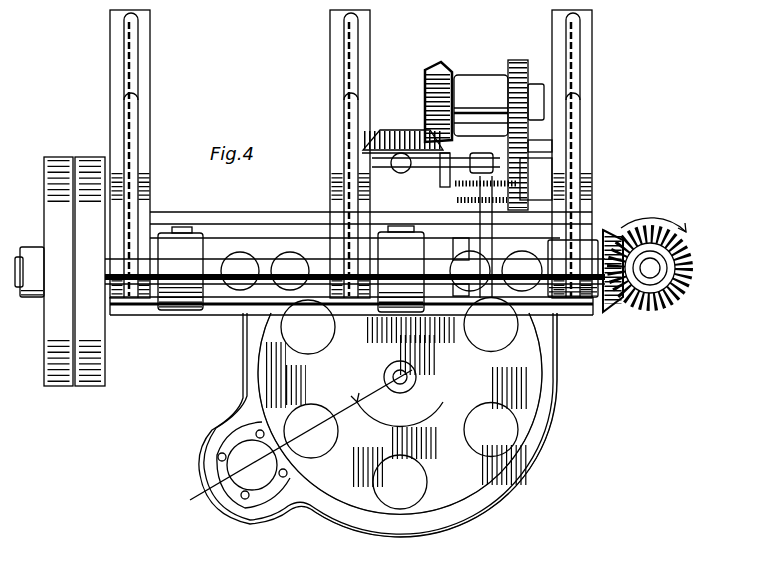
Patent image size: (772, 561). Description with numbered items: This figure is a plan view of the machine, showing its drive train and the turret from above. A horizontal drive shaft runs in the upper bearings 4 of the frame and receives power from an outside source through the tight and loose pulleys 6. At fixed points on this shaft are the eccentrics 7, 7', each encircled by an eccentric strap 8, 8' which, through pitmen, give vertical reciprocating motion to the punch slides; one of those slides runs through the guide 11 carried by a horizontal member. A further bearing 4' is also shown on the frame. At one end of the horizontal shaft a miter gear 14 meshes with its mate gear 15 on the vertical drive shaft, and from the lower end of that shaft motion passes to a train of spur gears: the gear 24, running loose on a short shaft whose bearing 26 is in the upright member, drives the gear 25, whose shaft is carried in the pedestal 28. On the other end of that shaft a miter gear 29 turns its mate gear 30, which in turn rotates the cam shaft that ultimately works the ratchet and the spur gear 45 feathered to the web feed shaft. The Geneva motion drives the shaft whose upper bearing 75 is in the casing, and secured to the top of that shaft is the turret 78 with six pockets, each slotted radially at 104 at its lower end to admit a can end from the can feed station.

The upper bearings 4 is at (351, 180).
The bearing block 4' is at (539, 237).
The tight and loose pulleys 6 is at (72, 160).
The eccentric 7 is at (302, 435).
The eccentric 7' is at (458, 267).
The eccentric strap 8 is at (180, 285).
The eccentric strap 8' is at (401, 269).
The guide 11 is at (572, 316).
The miter gear 14 is at (610, 232).
The mate gear 15 is at (652, 306).
The spur gear 24 is at (530, 150).
The spur gear 25 is at (527, 56).
The bearing 26 is at (543, 165).
The pedestal 28 is at (480, 82).
The miter gear 29 is at (435, 64).
The mate gear 30 is at (403, 121).
The spur gear 45 is at (458, 200).
The bearing 75 is at (203, 265).
The turret 78 is at (530, 388).
The radial slots 104 is at (523, 424).